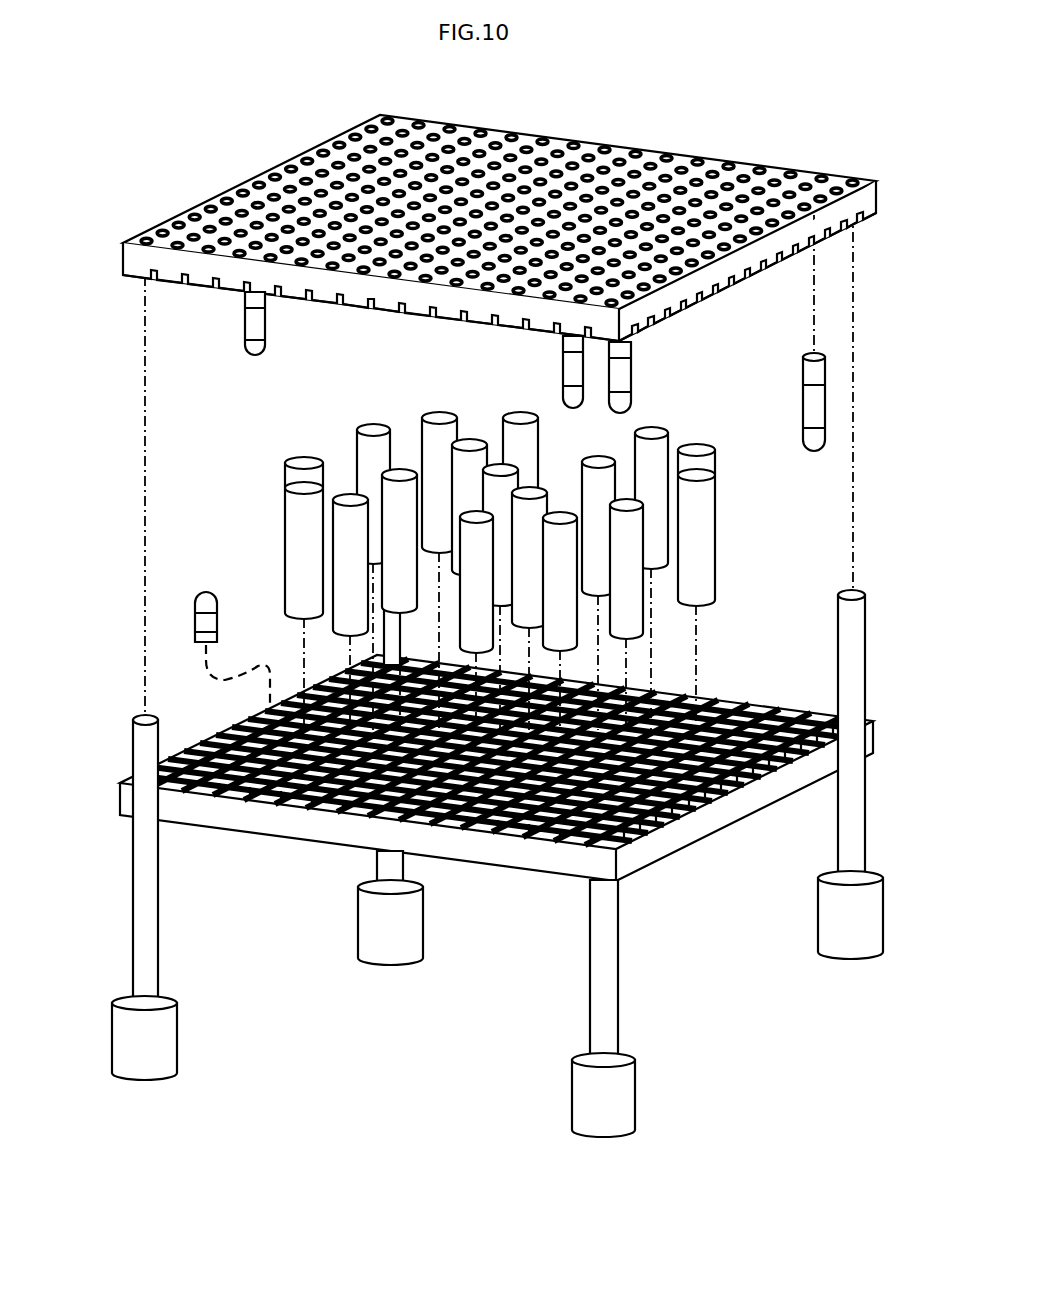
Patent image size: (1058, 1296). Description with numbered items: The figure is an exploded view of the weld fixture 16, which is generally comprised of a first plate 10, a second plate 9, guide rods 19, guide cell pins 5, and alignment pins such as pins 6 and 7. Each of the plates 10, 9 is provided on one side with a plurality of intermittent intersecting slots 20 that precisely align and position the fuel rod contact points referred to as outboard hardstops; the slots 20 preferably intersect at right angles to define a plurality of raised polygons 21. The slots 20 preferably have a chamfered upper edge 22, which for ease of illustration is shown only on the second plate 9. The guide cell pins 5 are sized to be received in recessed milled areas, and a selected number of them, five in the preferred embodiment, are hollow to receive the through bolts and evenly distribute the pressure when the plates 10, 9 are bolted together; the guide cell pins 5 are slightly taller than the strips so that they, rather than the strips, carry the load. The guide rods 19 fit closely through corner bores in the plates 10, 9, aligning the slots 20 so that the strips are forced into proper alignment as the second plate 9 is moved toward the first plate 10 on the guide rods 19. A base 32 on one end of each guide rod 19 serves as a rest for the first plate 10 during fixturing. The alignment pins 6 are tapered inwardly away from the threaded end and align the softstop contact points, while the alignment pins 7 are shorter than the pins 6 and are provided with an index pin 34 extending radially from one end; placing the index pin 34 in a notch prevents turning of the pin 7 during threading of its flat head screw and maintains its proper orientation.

The weld fixture 16 is at (473, 274).
The second plate 9 is at (473, 241).
The alignment pin 6 is at (263, 318).
The chamfered upper edge 22 is at (417, 316).
The intermittent intersecting slots 20 is at (752, 790).
The guide cell pin 5 is at (287, 505).
The alignment pin 7 is at (181, 641).
The index pin 34 is at (195, 638).
The first plate 10 is at (475, 599).
The raised polygons 21 is at (310, 800).
The guide rod 19 is at (472, 863).
The base 32 is at (135, 1035).